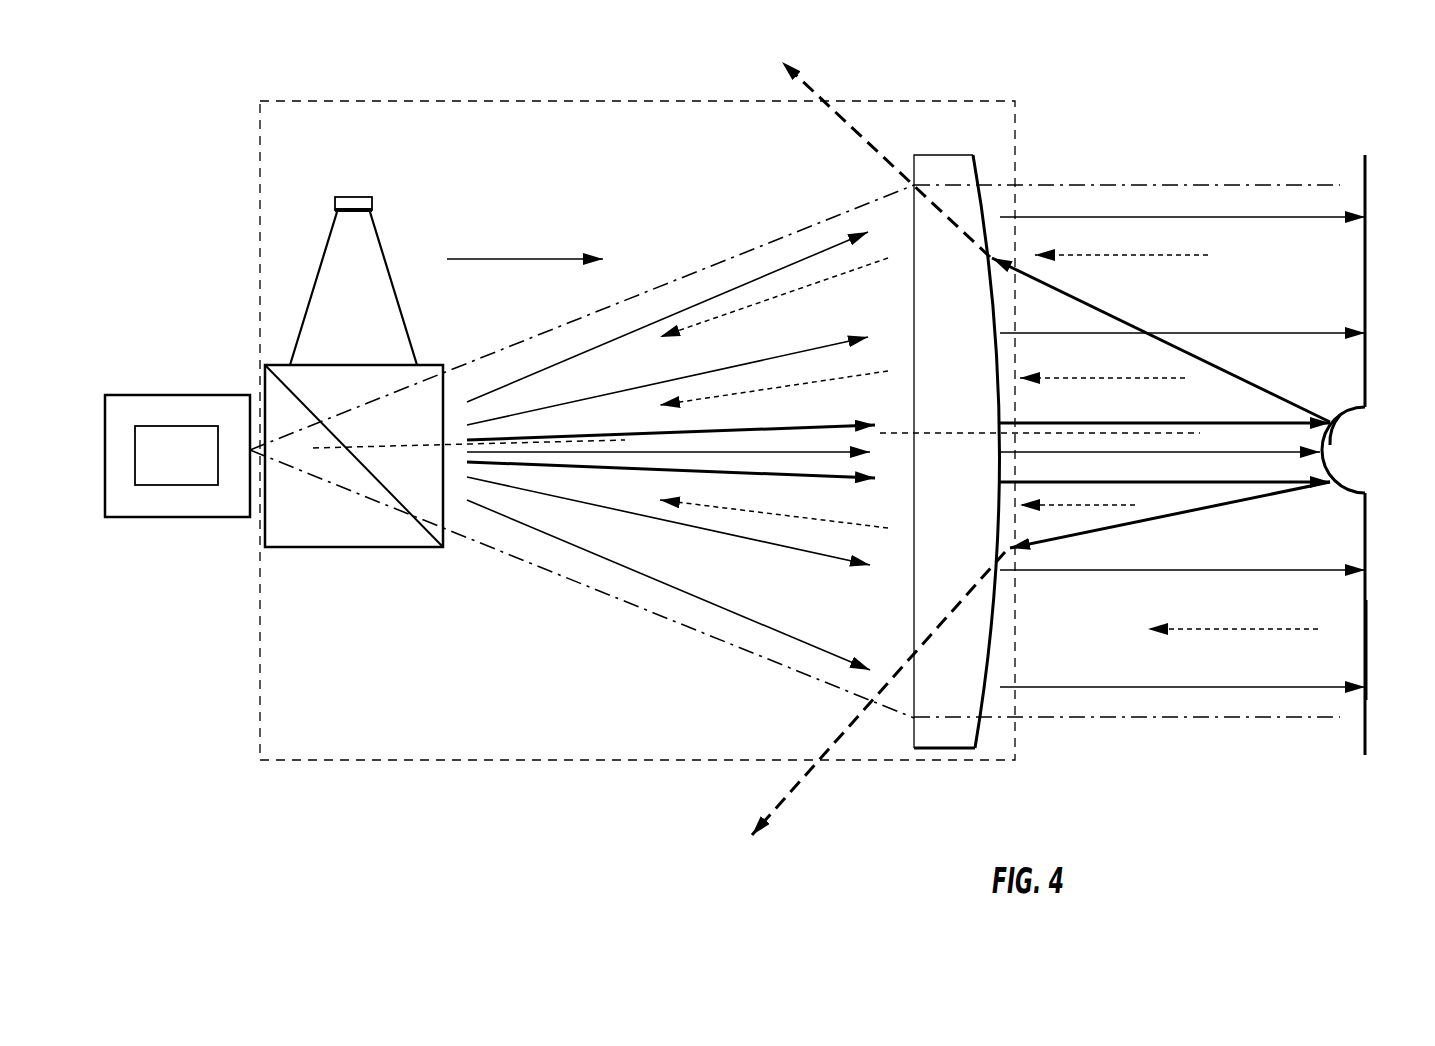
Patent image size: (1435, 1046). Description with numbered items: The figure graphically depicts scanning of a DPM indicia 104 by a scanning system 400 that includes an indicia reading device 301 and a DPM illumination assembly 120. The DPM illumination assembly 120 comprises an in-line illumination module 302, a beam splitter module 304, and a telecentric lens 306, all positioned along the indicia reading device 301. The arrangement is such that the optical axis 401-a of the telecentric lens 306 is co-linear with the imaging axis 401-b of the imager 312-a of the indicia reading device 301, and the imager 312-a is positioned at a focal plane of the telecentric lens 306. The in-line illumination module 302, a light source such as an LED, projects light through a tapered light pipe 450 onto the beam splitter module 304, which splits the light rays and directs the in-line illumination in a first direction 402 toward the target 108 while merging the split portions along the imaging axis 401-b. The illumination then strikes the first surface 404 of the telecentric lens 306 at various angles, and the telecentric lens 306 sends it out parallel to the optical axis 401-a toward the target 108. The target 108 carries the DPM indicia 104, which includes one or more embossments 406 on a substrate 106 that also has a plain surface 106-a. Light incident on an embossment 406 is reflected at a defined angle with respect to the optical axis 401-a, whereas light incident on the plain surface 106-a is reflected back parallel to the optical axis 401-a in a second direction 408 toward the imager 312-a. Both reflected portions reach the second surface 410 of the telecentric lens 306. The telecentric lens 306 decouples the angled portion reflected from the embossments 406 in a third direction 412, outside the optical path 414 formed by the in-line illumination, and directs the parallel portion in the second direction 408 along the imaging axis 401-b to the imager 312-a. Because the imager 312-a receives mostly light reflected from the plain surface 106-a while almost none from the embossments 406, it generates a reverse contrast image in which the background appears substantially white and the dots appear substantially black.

The scanning system 400 is at (190, 123).
The DPM illumination assembly 120 is at (505, 100).
The in-line illumination module 302 is at (363, 197).
The tapered light pipe 450 is at (305, 315).
The beam splitter module 304 is at (335, 548).
The indicia reading device 301 is at (145, 519).
The imager 312-a is at (148, 468).
The imaging axis 401-b is at (356, 440).
The first direction 402 is at (510, 262).
The telecentric lens 306 is at (924, 147).
The second surface 410 is at (992, 652).
The first surface 404 is at (942, 750).
The optical axis 401-a is at (961, 435).
The optical path 414 is at (1125, 183).
The substrate 106 is at (1385, 318).
The plain surface 106-a is at (1367, 642).
The target 108 is at (1387, 467).
The embossment 406 is at (1336, 433).
The DPM indicia 104 is at (1355, 468).
The second direction 408 is at (1245, 625).
The third direction 412 is at (820, 95).